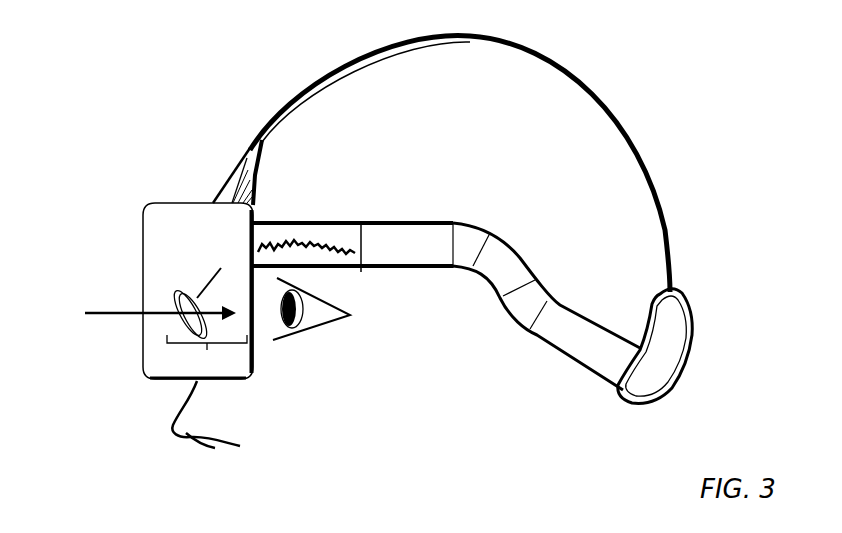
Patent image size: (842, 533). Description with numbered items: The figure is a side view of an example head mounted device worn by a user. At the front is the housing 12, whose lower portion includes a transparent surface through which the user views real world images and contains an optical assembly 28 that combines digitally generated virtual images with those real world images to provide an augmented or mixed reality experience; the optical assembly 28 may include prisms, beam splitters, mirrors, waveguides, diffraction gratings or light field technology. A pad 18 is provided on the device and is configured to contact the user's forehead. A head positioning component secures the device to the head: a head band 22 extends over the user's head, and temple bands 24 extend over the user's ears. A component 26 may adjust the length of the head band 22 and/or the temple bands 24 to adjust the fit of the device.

The housing 12 is at (149, 199).
The pad 18 is at (218, 164).
The head band 22 is at (519, 38).
The temple bands 24 is at (498, 223).
The component 26 is at (688, 289).
The optical assembly 28 is at (207, 354).